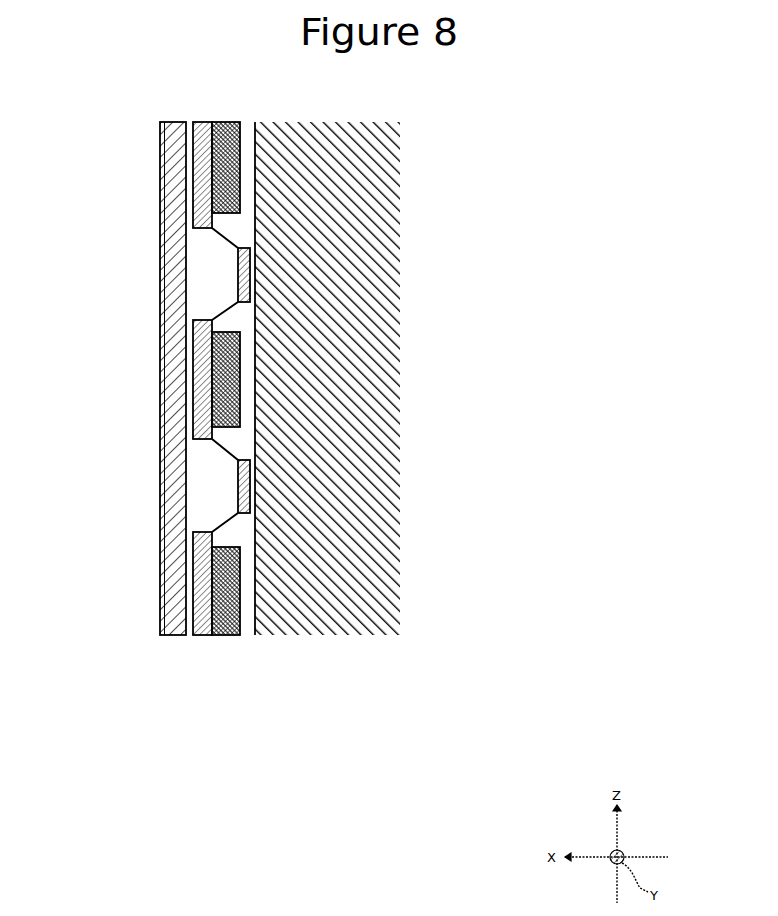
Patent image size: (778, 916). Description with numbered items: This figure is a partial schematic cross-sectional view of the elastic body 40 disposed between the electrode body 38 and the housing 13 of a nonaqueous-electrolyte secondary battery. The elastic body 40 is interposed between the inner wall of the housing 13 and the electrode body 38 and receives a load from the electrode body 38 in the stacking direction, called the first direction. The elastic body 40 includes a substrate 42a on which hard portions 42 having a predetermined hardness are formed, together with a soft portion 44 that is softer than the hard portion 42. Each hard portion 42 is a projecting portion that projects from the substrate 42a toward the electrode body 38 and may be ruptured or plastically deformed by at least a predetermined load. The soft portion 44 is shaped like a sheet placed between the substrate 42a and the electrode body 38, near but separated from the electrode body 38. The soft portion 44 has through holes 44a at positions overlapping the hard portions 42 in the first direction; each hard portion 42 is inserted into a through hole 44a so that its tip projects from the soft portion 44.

The housing 13 is at (162, 298).
The electrode body 38 is at (350, 636).
The elastic body 40 is at (284, 411).
The hard portion 42 is at (238, 489).
The substrate 42a is at (206, 637).
The soft portion 44 is at (228, 637).
The through hole 44a is at (232, 534).